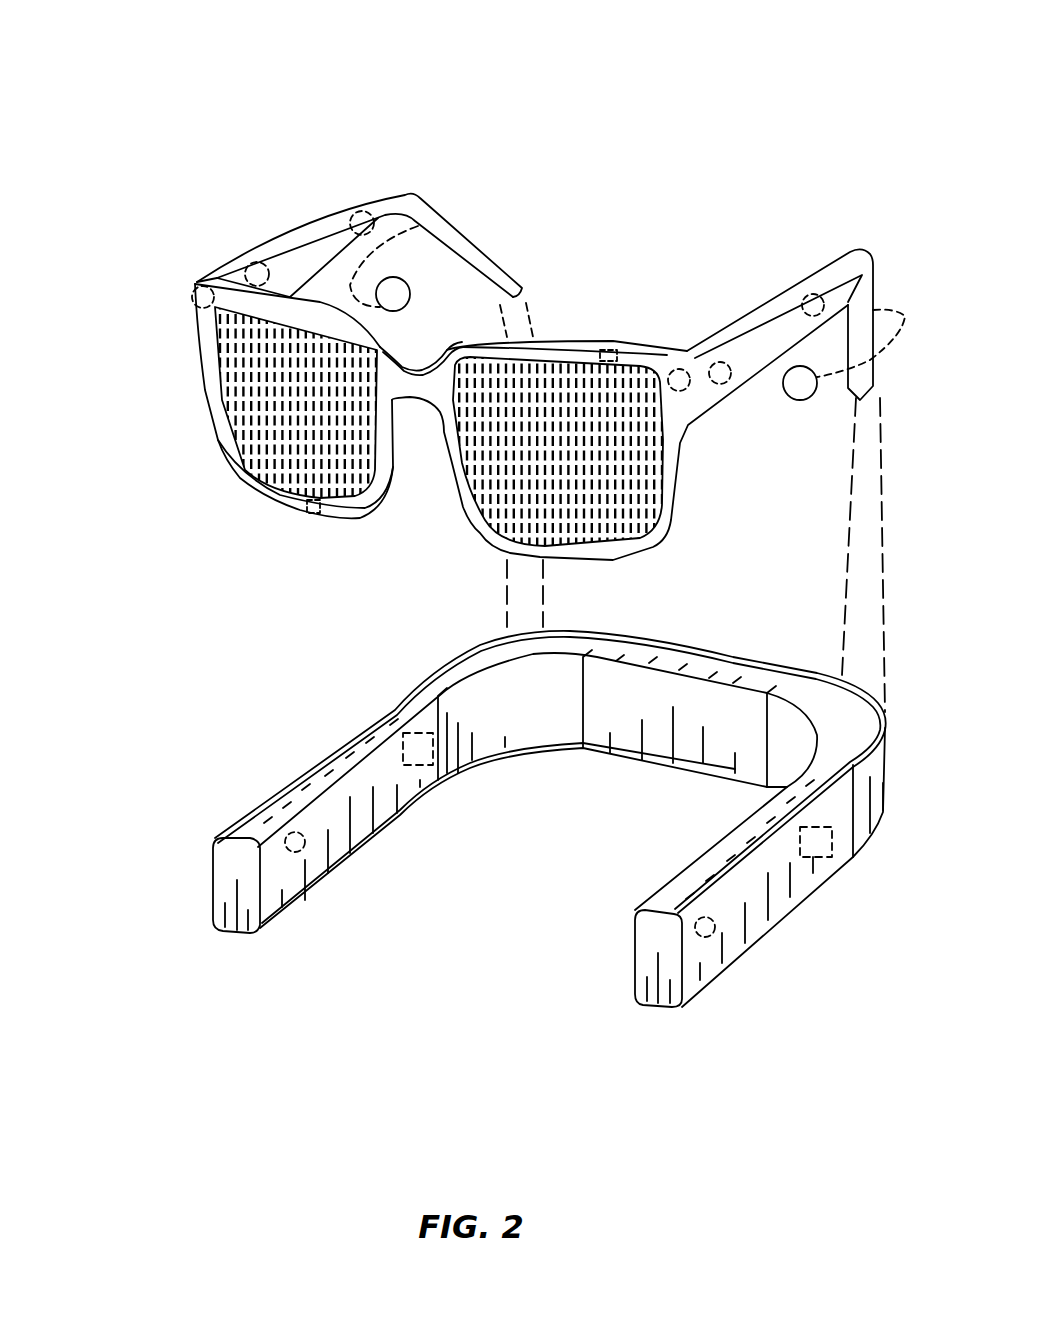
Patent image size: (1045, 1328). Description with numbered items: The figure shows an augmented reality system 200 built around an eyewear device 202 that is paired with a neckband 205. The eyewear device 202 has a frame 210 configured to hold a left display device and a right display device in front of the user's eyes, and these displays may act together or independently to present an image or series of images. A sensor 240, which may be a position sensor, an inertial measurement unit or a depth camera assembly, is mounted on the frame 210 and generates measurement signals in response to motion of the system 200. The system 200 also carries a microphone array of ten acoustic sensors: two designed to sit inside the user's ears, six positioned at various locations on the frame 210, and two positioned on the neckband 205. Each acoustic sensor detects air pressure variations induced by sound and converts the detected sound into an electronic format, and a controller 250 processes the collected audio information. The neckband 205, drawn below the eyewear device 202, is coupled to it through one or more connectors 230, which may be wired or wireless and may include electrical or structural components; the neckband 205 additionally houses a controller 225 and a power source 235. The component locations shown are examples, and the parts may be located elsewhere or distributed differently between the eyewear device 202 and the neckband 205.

The AR system 200 is at (118, 88).
The eyewear device 202 is at (325, 515).
The neckband 205 is at (213, 943).
The frame 210 is at (418, 206).
The controller 225 is at (805, 855).
The connector 230 is at (871, 567).
The power source 235 is at (414, 758).
The sensor 240 is at (302, 514).
The controller 250 is at (607, 349).